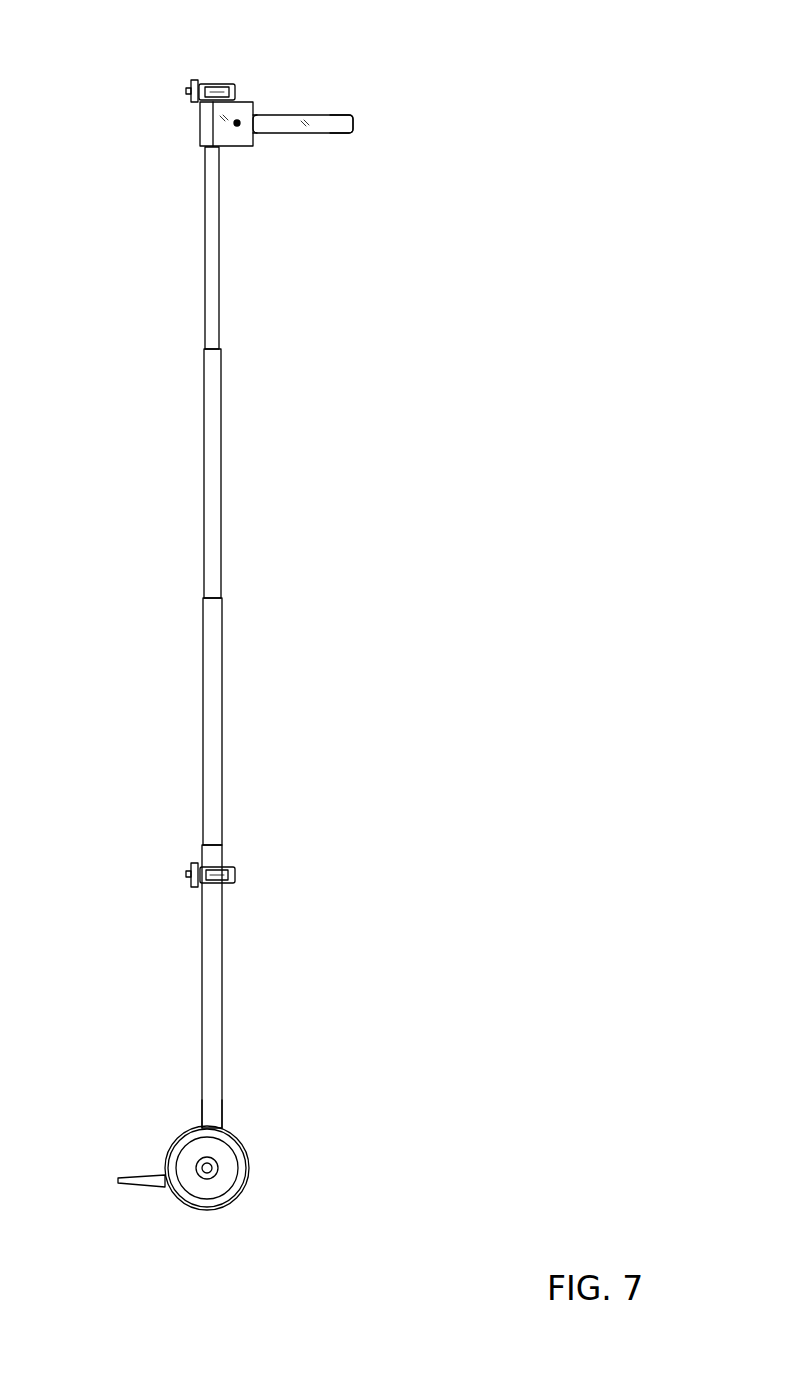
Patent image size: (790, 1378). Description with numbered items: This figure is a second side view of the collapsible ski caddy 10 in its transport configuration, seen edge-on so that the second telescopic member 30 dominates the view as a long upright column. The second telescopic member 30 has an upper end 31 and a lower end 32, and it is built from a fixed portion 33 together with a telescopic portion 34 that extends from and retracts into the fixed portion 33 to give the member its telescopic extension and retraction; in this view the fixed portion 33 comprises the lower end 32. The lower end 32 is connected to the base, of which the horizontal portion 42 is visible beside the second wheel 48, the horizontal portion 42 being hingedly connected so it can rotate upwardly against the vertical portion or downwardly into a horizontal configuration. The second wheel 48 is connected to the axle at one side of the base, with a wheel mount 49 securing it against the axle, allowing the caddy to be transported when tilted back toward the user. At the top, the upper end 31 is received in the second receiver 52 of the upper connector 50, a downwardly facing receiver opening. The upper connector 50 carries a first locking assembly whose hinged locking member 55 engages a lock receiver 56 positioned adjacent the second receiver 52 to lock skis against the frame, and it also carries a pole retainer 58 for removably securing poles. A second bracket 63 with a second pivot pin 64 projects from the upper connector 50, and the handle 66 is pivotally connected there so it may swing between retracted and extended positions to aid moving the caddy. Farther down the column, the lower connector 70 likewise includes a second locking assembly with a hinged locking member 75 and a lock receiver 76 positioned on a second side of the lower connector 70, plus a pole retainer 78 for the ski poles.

The collapsible ski caddy 10 is at (527, 137).
The second telescopic member 30 is at (229, 637).
The upper end 31 is at (204, 157).
The lower end 32 is at (222, 1120).
The fixed portion 33 is at (222, 1007).
The telescopic portion 34 is at (203, 393).
The horizontal portion 42 is at (141, 1177).
The second wheel 48 is at (277, 1177).
The wheel mount 49 is at (214, 1164).
The upper connector 50 is at (214, 65).
The second receiver 52 is at (198, 124).
The locking member 55 is at (190, 84).
The lock receiver 56 is at (188, 100).
The pole retainer 58 is at (222, 88).
The second bracket 63 is at (256, 103).
The second pivot pin 64 is at (237, 123).
The handle 66 is at (337, 133).
The lower connector 70 is at (232, 863).
The locking member 75 is at (191, 865).
The lock receiver 76 is at (191, 882).
The pole retainer 78 is at (236, 878).